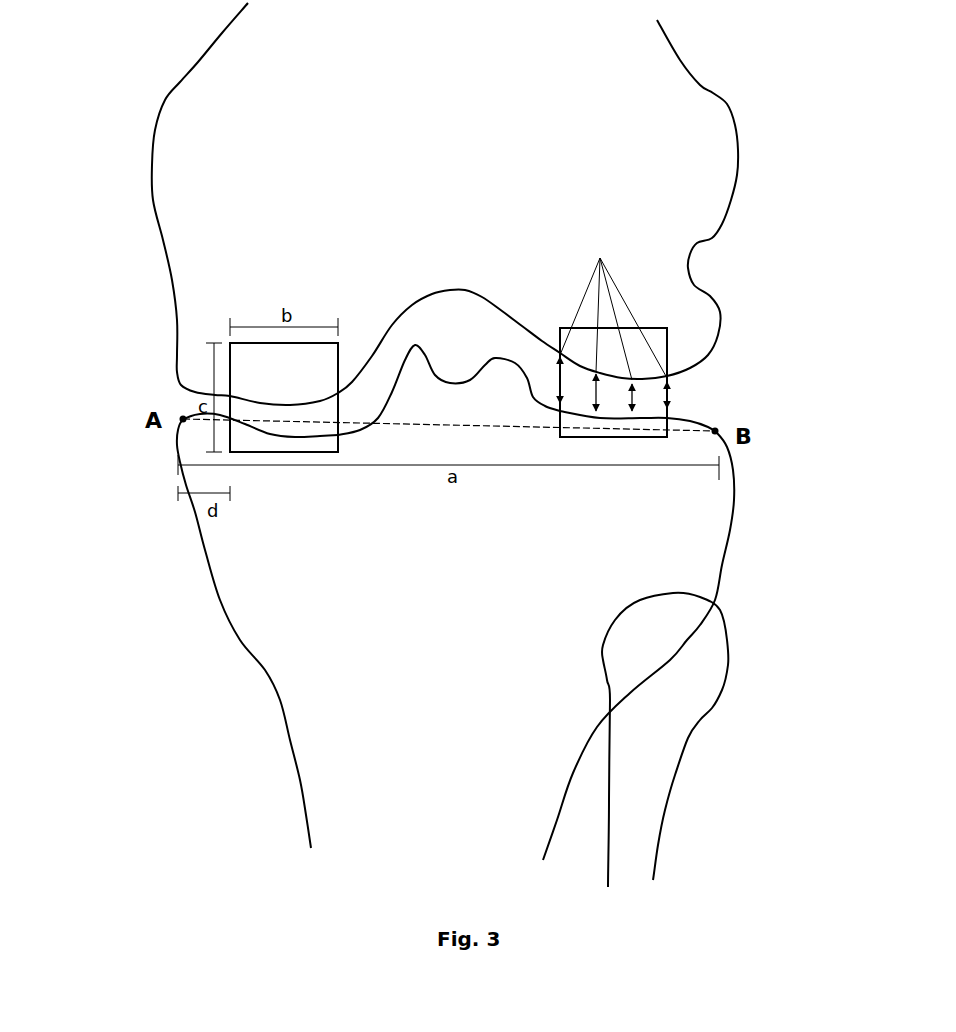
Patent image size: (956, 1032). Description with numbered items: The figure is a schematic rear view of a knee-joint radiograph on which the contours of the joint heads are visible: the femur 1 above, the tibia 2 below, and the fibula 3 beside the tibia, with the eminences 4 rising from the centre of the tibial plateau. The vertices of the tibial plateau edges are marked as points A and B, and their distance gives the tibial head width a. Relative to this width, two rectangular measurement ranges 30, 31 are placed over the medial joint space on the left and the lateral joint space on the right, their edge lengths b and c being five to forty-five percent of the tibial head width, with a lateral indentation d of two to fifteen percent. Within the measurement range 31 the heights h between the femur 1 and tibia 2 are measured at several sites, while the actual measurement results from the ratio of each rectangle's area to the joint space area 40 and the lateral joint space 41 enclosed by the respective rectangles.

The femur 1 is at (480, 105).
The tibia 2 is at (447, 718).
The fibula 3 is at (665, 677).
The eminences 4 is at (455, 363).
The medial measurement range 30 is at (230, 343).
The lateral measurement range 31 is at (667, 328).
The medial joint space area 40 is at (303, 422).
The lateral joint space 41 is at (647, 395).